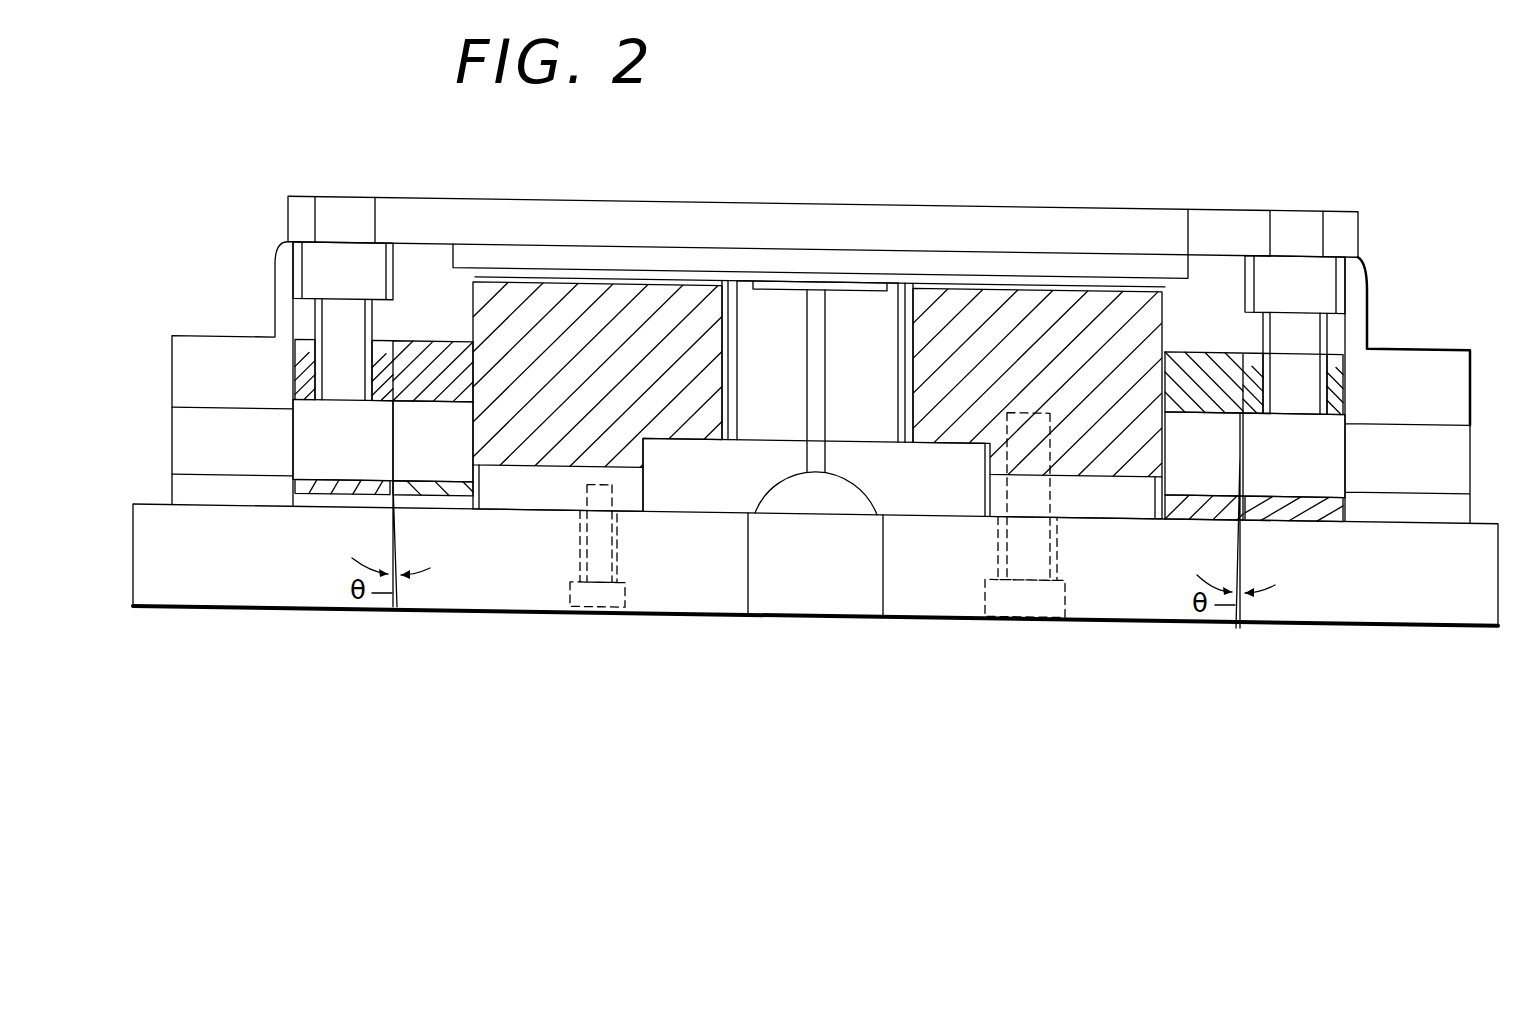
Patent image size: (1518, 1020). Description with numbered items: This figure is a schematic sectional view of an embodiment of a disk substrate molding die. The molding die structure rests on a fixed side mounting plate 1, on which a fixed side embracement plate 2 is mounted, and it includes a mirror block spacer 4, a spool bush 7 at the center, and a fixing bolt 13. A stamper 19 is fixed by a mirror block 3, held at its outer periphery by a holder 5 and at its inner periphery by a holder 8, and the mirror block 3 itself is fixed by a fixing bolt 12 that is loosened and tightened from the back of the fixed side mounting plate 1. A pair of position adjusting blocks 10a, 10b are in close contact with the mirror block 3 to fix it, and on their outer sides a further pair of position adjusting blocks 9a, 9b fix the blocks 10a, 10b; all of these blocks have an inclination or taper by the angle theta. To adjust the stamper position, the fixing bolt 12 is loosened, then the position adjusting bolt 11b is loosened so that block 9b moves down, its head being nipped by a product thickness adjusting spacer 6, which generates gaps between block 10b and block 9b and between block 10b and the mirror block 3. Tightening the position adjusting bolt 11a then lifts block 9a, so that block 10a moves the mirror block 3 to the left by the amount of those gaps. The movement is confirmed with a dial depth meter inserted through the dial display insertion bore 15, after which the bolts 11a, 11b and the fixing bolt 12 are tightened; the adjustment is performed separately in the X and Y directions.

The fixed side mounting plate 1 is at (1440, 610).
The fixed side embracement plate 2 is at (1416, 390).
The mirror block 3 is at (1014, 315).
The mirror block spacer 4 is at (1117, 500).
The holder 5 is at (1220, 272).
The product thickness adjusting spacer 6 is at (1250, 228).
The spool bush 7 is at (920, 495).
The holder 8 is at (920, 315).
The position adjusting block 9a is at (1322, 505).
The position adjusting block 9b is at (333, 495).
The position adjusting block 10a is at (1173, 517).
The position adjusting block 10b is at (447, 505).
The position adjusting bolt 11a is at (1320, 290).
The position adjusting bolt 11b is at (373, 275).
The fixing bolt 12 is at (1037, 425).
The fixing bolt 13 is at (603, 552).
The dial display insertion bore 15 is at (215, 433).
The stamper 19 is at (978, 285).